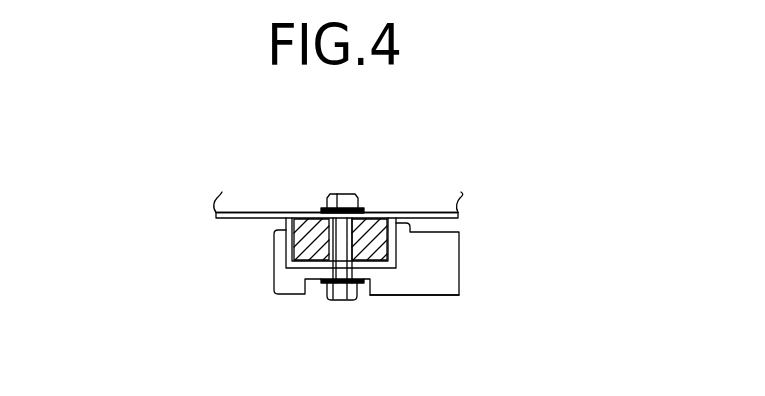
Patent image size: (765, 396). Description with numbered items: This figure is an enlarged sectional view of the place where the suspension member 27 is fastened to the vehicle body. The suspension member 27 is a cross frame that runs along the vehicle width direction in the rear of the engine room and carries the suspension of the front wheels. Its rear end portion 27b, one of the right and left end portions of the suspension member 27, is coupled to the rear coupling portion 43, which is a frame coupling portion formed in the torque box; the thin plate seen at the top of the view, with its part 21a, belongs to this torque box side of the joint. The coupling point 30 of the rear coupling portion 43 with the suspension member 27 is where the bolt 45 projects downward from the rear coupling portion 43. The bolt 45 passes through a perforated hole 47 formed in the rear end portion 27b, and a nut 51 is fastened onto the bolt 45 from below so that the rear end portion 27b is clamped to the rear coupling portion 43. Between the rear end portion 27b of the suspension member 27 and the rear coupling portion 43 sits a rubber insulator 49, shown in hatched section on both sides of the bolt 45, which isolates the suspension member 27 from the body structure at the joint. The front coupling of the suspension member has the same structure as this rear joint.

The mounting plate portion 21a is at (233, 221).
The rear coupling portion 43 is at (268, 211).
The coupling point 30 is at (323, 205).
The bolt 45 is at (334, 248).
The rubber insulator 49 is at (294, 246).
The suspension member 27 is at (460, 266).
The rear end portion 27b is at (392, 297).
The nut 51 is at (342, 297).
The perforated hole 47 is at (333, 297).